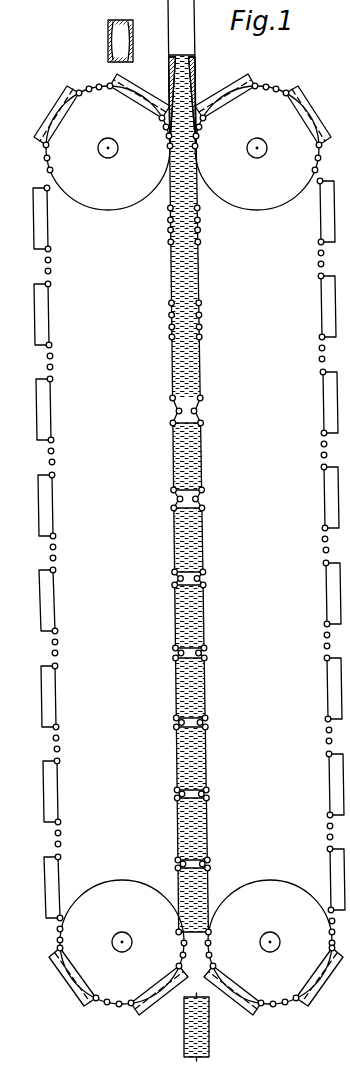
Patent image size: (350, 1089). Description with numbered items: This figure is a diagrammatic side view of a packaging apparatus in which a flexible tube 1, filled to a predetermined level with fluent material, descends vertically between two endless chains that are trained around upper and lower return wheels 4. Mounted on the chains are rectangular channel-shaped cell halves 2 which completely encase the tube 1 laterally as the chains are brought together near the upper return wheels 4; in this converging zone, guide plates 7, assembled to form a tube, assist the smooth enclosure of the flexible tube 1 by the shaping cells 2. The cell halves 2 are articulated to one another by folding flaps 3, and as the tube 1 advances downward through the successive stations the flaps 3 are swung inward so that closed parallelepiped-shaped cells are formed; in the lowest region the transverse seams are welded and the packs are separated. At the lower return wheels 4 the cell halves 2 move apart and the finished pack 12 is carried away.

The tube 1 is at (186, 35).
The cell halves 2 is at (54, 112).
The folding flaps 3 is at (44, 170).
The return wheels 4 is at (133, 196).
The guide plates 7 is at (108, 40).
The finished pack 12 is at (190, 1030).